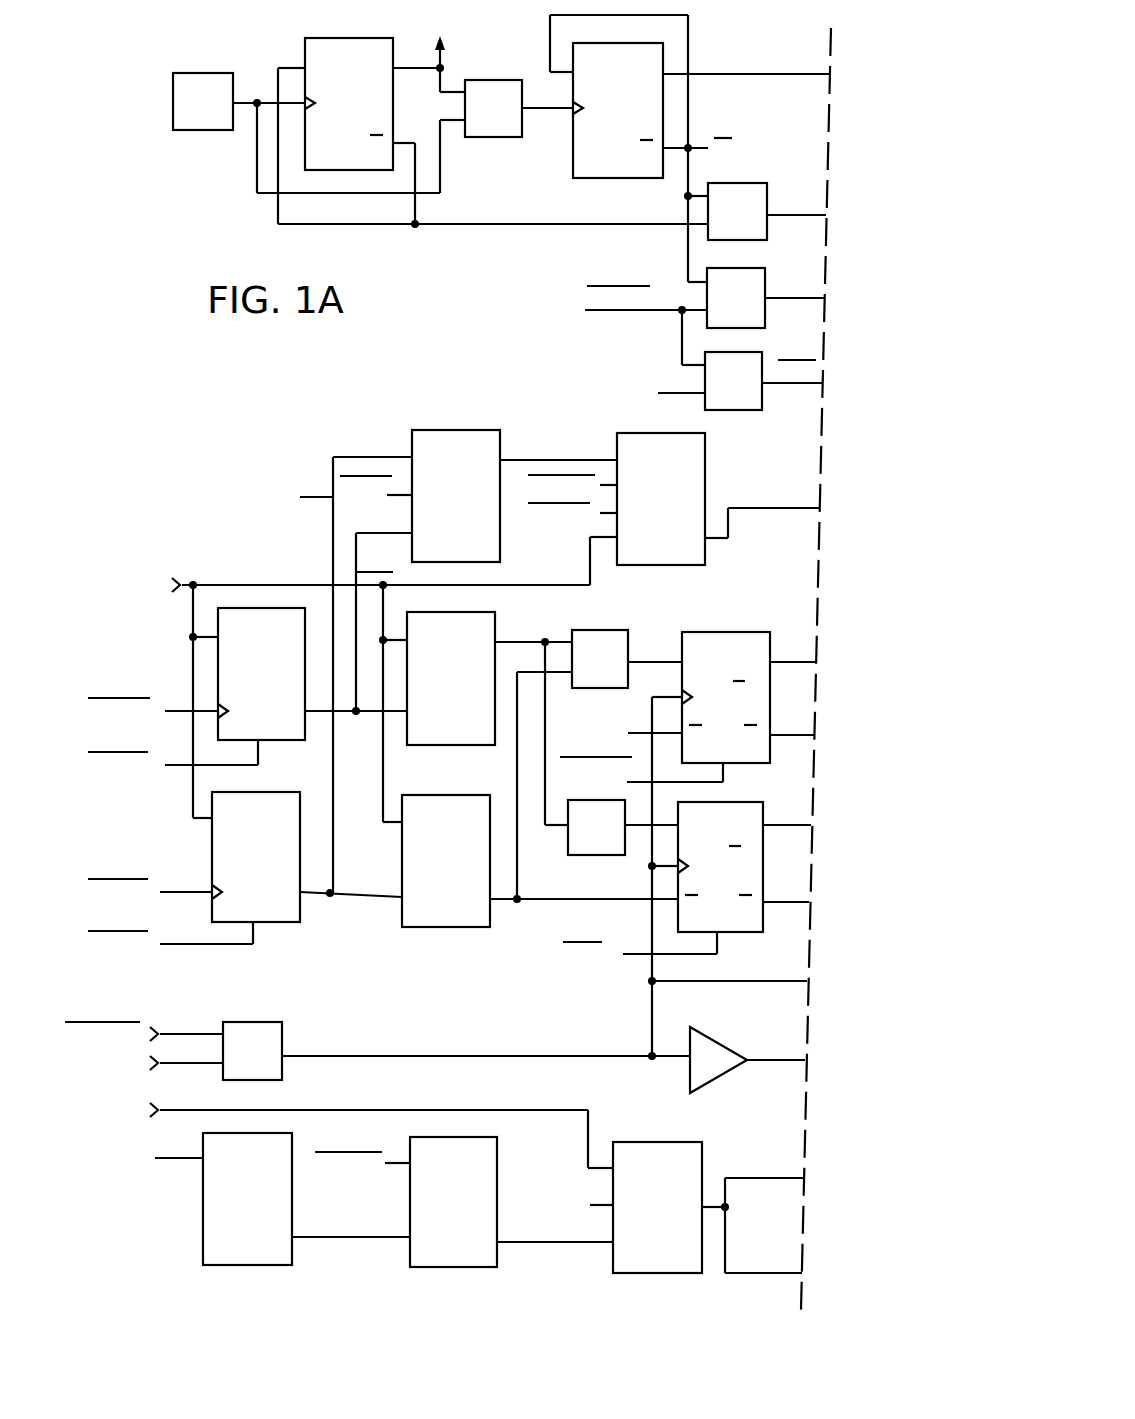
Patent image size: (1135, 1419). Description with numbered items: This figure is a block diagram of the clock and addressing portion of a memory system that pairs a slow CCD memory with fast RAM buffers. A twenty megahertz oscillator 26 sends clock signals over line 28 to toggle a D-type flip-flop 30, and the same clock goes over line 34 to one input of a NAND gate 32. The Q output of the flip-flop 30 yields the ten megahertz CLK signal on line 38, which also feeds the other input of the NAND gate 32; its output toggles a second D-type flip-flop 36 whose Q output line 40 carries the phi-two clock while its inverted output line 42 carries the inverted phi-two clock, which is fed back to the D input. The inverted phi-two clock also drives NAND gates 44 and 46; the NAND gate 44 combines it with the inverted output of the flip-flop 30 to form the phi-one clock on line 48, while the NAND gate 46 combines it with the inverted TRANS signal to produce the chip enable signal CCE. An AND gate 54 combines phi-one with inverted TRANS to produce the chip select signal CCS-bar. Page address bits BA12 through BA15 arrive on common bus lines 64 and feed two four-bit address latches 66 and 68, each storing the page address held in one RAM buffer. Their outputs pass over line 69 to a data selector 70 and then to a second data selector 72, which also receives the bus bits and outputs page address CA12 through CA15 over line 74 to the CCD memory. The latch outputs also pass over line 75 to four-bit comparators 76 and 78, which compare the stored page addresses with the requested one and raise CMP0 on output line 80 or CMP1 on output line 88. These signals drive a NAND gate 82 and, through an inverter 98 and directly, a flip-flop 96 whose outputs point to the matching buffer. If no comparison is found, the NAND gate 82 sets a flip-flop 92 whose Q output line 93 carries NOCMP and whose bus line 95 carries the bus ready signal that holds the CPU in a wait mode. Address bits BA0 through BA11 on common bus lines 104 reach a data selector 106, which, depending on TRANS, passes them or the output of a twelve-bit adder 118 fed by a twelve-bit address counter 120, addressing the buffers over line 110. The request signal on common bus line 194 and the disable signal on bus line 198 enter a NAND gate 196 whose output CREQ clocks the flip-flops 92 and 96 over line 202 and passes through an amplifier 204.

The oscillator 26 is at (191, 119).
The line 28 is at (254, 68).
The D-type flip-flop 30 is at (346, 85).
The NAND gate 32 is at (520, 128).
The line 34 is at (385, 157).
The D-type flip-flop 36 is at (619, 148).
The line 38 is at (464, 51).
The Q output line 40 is at (746, 57).
The Q-bar output line 42 is at (708, 132).
The NAND gate 44 is at (755, 198).
The NAND gate 46 is at (704, 285).
The line 48 is at (694, 415).
The AND gate 54 is at (752, 360).
The common bus lines 64 is at (321, 571).
The four-bit address latch 66 is at (204, 701).
The four-bit address latch 68 is at (206, 884).
The line 69 is at (347, 674).
The data selector 70 is at (416, 479).
The data selector 72 is at (602, 494).
The line 74 is at (762, 513).
The line 75 is at (353, 802).
The four-bit comparator 76 is at (437, 703).
The four-bit comparator 78 is at (436, 885).
The output line 80 is at (553, 714).
The NAND gate 82 is at (599, 751).
The output line 88 is at (580, 918).
The J-K-bar flip-flop 92 is at (665, 826).
The Q output line 93 is at (793, 630).
The bus line 95 is at (792, 711).
The J-K-bar flip-flop 96 is at (687, 866).
The inverter 98 is at (603, 842).
The common bus lines 104 is at (329, 1120).
The data selector 106 is at (617, 1190).
The line 110 is at (741, 1221).
The twelve-bit adder 118 is at (464, 1221).
The twelve-bit address counter 120 is at (264, 1219).
The common bus line 194 is at (144, 1014).
The NAND gate 196 is at (268, 1031).
The bus line 198 is at (162, 1080).
The line 202 is at (544, 1018).
The amplifier 204 is at (747, 1053).